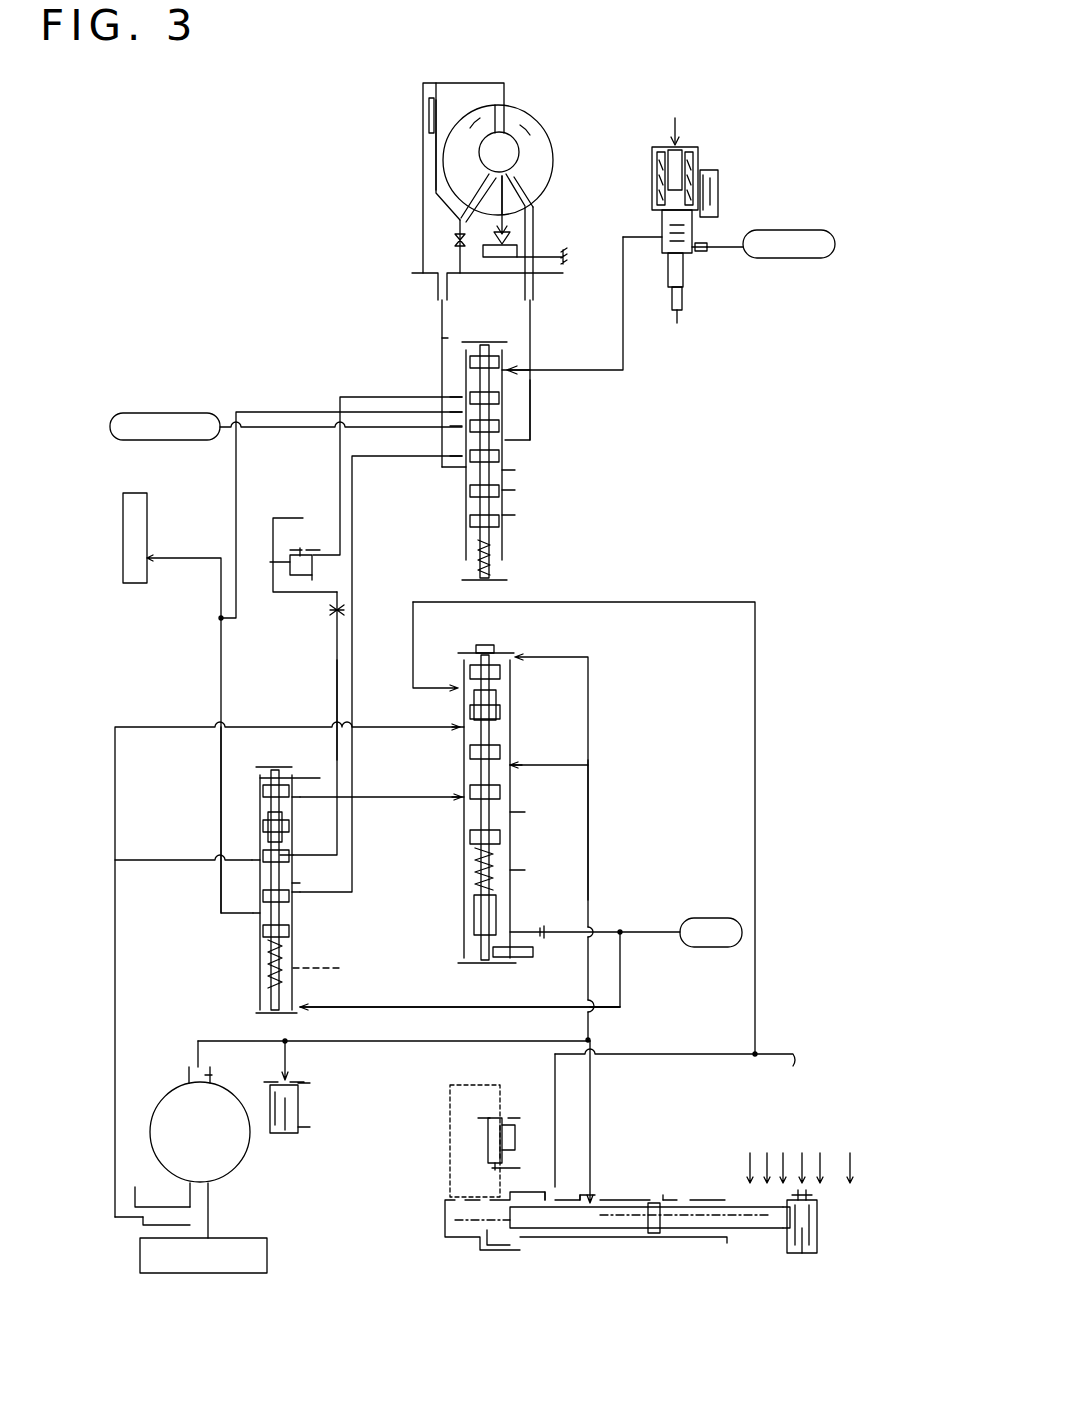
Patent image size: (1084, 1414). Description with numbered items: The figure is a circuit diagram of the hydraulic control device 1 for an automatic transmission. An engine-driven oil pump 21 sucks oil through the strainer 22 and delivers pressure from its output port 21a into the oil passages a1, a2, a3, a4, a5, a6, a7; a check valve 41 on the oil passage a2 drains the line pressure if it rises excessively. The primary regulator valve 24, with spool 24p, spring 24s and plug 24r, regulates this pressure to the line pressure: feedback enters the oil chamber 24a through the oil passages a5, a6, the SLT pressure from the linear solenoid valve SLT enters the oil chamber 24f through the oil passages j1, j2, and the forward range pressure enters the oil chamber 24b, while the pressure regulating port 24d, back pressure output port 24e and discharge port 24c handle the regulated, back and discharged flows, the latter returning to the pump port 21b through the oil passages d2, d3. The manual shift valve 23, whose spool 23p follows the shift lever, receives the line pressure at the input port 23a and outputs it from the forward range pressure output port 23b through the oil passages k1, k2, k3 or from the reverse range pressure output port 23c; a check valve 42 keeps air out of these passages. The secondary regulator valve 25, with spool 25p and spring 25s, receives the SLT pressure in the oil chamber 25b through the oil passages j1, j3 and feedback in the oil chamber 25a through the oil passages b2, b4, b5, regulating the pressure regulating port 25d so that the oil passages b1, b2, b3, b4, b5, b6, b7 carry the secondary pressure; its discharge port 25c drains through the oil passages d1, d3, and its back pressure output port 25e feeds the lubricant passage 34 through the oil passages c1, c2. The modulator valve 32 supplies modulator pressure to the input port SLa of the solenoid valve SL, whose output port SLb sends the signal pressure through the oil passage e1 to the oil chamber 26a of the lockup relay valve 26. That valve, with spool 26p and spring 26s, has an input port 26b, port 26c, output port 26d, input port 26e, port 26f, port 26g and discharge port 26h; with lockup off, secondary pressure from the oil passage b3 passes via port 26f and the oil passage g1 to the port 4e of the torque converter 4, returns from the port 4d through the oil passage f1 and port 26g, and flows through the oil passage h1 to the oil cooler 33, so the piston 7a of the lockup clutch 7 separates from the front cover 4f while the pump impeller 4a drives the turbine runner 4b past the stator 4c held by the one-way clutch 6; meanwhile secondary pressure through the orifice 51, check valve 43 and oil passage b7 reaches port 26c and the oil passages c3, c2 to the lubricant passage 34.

The hydraulic control device 1 is at (351, 97).
The torque converter 4 is at (493, 80).
The pump impeller 4a is at (517, 119).
The turbine runner 4b is at (473, 128).
The stator 4c is at (508, 206).
The L-UP·ON port 4d is at (530, 285).
The L-UP·OFF port 4e is at (438, 291).
The front cover 4f is at (420, 134).
The one-way clutch 6 is at (493, 242).
The lockup clutch 7 is at (418, 113).
The piston 7a is at (430, 153).
The oil pump 21 is at (237, 1177).
The output port 21a is at (212, 1073).
The port 21b is at (138, 1200).
The strainer 22 is at (228, 1238).
The manual shift valve 23 is at (613, 1240).
The input port 23a is at (617, 1184).
The forward range pressure output port 23b is at (560, 1187).
The reverse range pressure output port 23c is at (658, 1207).
The spool 23p is at (657, 1232).
The primary regulator valve 24 is at (500, 652).
The oil chamber 24a is at (498, 651).
The oil chamber 24b is at (460, 687).
The discharge port 24c is at (458, 735).
The pressure regulating port 24d is at (507, 773).
The back pressure output port 24e is at (462, 808).
The oil chamber 24f is at (473, 933).
The spool 24p is at (492, 700).
The plug 24r is at (480, 898).
The spring 24s is at (468, 853).
The secondary regulator valve 25 is at (278, 764).
The oil chamber 25a is at (282, 807).
The oil chamber 25b is at (263, 1008).
The discharge port 25c is at (254, 852).
The pressure regulating port 25d is at (296, 883).
The back pressure output port 25e is at (250, 911).
The spool 25p is at (281, 827).
The spring 25s is at (261, 933).
The lockup relay valve 26 is at (488, 338).
The oil chamber 26a is at (493, 377).
The input port 26b is at (460, 392).
The port 26c is at (462, 408).
The output port 26d is at (460, 425).
The input port 26e is at (460, 468).
The port 26f is at (462, 473).
The port 26g is at (505, 440).
The discharge port 26h is at (505, 484).
The spool 26p is at (490, 506).
The spring 26s is at (503, 562).
The modulator valve 32 is at (801, 230).
The oil cooler 33 is at (155, 413).
The lubricant passage 34 is at (137, 493).
The check valve 41 is at (288, 1140).
The check valve 42 is at (483, 1138).
The check valve 43 is at (317, 568).
The orifice 51 is at (326, 613).
The solenoid valve SL is at (685, 204).
The input port SLa is at (708, 250).
The output port SLb is at (640, 235).
The linear solenoid valve SLT is at (710, 915).
The oil passage a1 is at (227, 1030).
The oil passage a2 is at (288, 1053).
The oil passage a3 is at (423, 1034).
The oil passage a4 is at (590, 883).
The oil passage a5 is at (533, 763).
The oil passage a6 is at (588, 678).
The oil passage a7 is at (613, 1120).
The oil passage b1 is at (408, 796).
The oil passage b2 is at (352, 878).
The oil passage b3 is at (356, 660).
The oil passage b4 is at (330, 855).
The oil passage b5 is at (321, 792).
The oil passage b6 is at (333, 656).
The oil passage b7 is at (339, 475).
The oil passage c1 is at (220, 818).
The oil passage c2 is at (174, 553).
The oil passage c3 is at (258, 496).
The oil passage d1 is at (168, 862).
The oil passage d2 is at (117, 812).
The oil passage d3 is at (141, 997).
The oil passage e1 is at (626, 370).
The oil passage f1 is at (530, 415).
The oil passage g1 is at (440, 338).
The oil passage h1 is at (294, 428).
The oil passage j1 is at (657, 933).
The oil passage j2 is at (578, 928).
The oil passage j3 is at (420, 1006).
The oil passage k1 is at (657, 1055).
The oil passage k2 is at (755, 970).
The oil passage k3 is at (800, 1040).